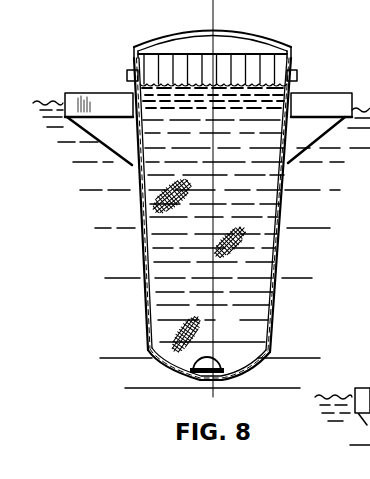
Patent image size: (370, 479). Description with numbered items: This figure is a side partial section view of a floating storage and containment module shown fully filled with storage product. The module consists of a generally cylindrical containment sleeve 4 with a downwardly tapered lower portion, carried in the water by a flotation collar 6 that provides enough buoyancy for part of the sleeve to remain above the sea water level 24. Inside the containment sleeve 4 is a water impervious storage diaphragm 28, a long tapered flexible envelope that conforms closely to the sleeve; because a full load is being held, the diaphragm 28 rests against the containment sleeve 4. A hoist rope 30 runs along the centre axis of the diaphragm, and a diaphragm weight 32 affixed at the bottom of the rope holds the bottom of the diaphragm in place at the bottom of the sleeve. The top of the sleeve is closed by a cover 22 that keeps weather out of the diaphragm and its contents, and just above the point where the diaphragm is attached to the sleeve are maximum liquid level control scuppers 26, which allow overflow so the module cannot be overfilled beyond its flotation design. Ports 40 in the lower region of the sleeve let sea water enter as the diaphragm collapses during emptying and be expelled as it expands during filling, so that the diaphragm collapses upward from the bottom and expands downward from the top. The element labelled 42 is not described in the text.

The containment sleeve 4 is at (132, 107).
The flotation collar 6 is at (116, 150).
The cover 22 is at (289, 45).
The sea water level 24 is at (53, 102).
The maximum liquid level control scuppers 26 is at (298, 76).
The storage diaphragm 28 is at (268, 245).
The hoist rope 30 is at (210, 320).
The diaphragm weight 32 is at (230, 379).
The ports 40 is at (183, 372).
The hanging curtain 42 is at (240, 83).